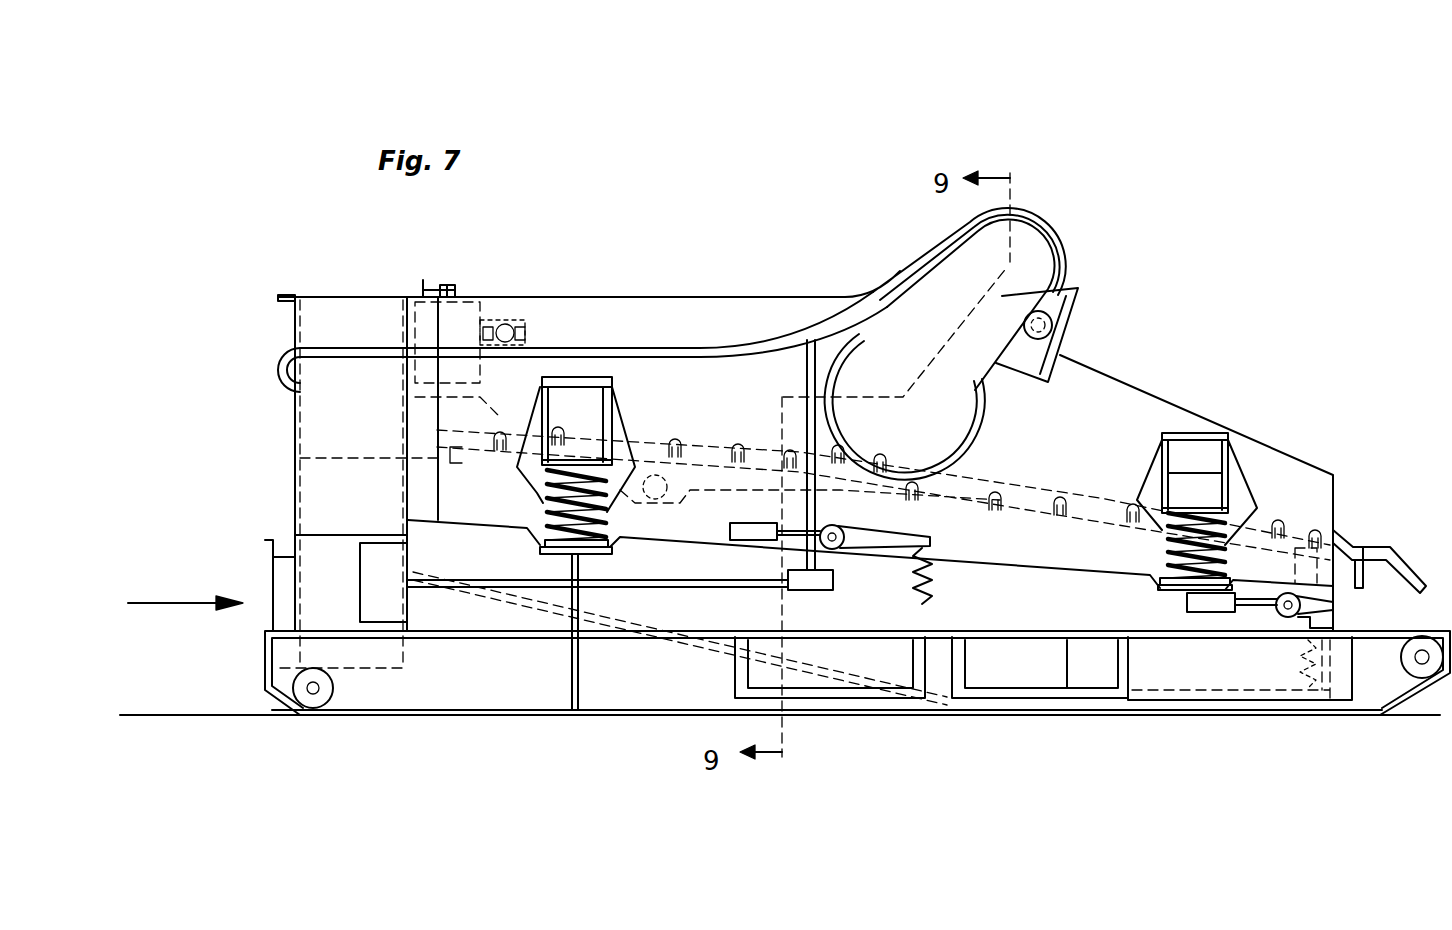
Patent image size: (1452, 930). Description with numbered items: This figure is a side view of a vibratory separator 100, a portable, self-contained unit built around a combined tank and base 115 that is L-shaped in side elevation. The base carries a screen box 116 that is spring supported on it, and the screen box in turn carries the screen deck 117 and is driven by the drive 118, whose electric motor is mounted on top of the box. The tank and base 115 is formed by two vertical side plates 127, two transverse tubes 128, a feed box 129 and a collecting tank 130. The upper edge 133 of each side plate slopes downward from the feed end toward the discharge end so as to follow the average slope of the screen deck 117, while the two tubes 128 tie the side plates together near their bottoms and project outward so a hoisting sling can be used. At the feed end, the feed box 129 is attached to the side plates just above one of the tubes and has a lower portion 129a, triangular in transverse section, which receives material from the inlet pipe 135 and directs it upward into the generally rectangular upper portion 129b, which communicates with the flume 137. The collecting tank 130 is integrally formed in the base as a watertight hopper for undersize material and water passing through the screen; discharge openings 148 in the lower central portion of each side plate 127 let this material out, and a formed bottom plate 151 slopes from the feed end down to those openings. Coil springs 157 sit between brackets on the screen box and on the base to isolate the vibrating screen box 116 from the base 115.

The vibratory separator 100 is at (1205, 398).
The combined tank and base 115 is at (540, 668).
The screen box 116 is at (633, 285).
The screen deck 117 is at (1015, 478).
The drive 118 is at (962, 288).
The vertical side plates 127 is at (455, 613).
The transverse tubes 128 is at (316, 692).
The feed box 129 is at (293, 487).
The lower portion 129a is at (350, 503).
The upper portion 129b is at (348, 316).
The collecting tank 130 is at (712, 628).
The upper edge 133 is at (1050, 555).
The inlet pipe 135 is at (262, 597).
The flume 137 is at (410, 405).
The discharge openings 148 is at (1078, 688).
The bottom plate 151 is at (1232, 693).
The coil springs 157 is at (618, 517).